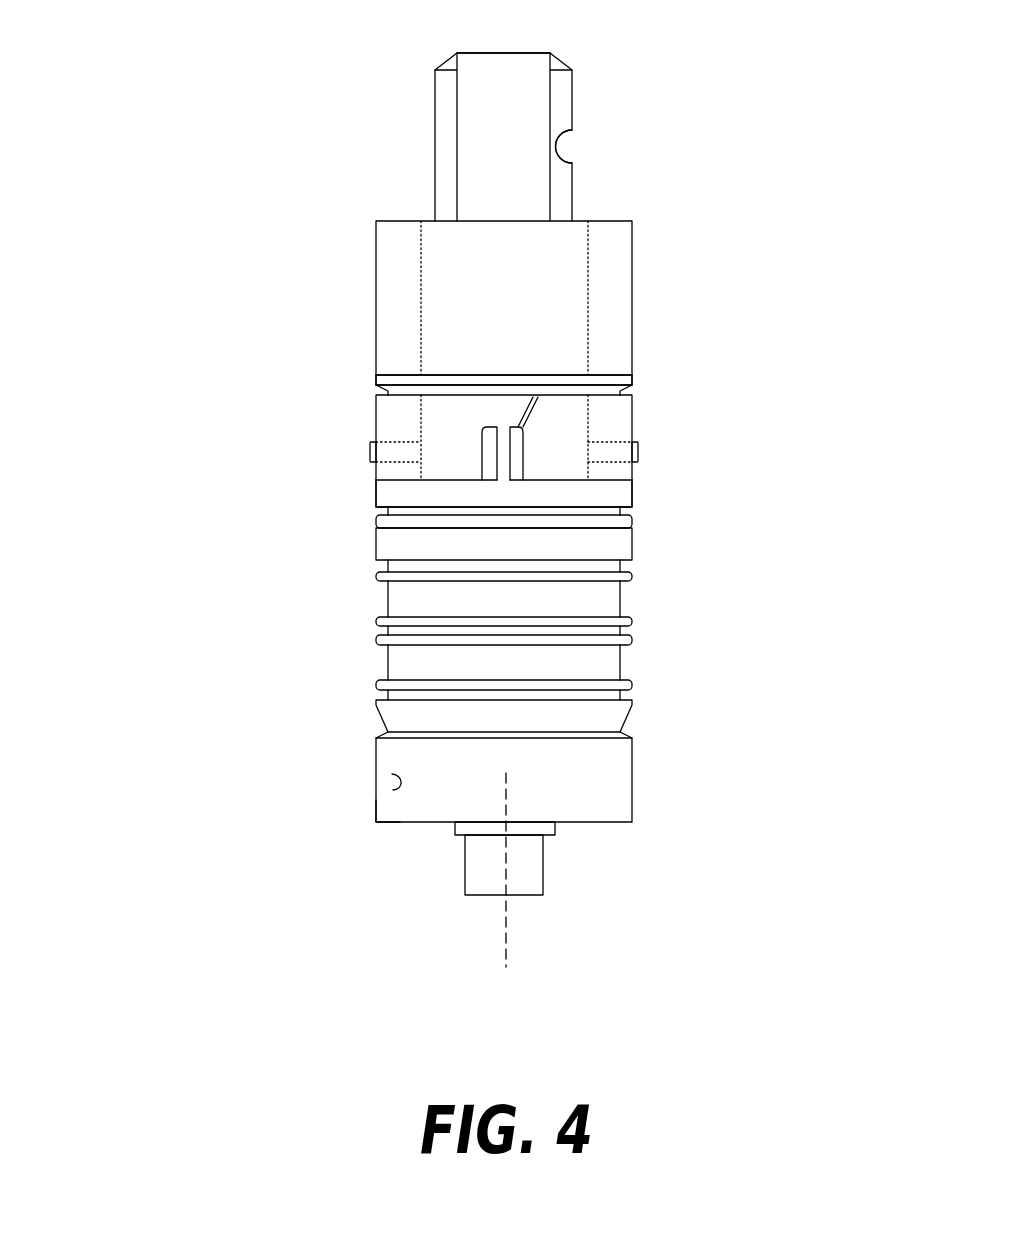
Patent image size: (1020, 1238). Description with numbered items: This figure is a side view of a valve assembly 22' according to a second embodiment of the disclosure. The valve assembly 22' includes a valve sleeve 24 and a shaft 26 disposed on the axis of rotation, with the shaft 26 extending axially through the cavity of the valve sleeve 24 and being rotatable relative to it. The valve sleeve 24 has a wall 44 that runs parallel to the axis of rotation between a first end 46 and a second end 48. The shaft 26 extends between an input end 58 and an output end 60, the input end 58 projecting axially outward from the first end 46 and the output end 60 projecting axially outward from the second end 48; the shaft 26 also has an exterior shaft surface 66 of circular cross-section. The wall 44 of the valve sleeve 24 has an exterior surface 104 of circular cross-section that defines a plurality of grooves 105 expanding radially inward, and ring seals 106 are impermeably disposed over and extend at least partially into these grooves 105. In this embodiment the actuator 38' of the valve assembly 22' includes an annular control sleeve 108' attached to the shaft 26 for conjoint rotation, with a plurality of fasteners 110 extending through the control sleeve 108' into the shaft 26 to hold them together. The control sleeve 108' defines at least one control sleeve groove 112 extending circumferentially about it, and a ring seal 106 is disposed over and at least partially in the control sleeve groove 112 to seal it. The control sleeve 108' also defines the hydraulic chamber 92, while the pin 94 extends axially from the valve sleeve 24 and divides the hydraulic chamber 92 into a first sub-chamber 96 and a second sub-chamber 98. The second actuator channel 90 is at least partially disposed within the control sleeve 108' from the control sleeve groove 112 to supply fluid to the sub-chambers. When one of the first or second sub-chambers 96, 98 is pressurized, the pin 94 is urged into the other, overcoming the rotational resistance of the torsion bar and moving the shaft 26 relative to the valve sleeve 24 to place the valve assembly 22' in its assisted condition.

The valve assembly 22' is at (436, 507).
The shaft 26 is at (424, 100).
The input end 58 is at (572, 66).
The exterior shaft surface 66 is at (572, 100).
The control sleeve 108' is at (447, 287).
The hydraulic chamber 92 is at (492, 425).
The second actuator channel 90 is at (533, 395).
The ring seal 106 is at (376, 382).
The control sleeve groove 112 is at (632, 387).
The actuator 38' is at (524, 373).
The fasteners 110 is at (370, 450).
The pin 94 is at (523, 452).
The first sub-chamber 96 is at (482, 470).
The second sub-chamber 98 is at (523, 466).
The first end 46 is at (632, 482).
The grooves 105 is at (376, 572).
The valve sleeve 24 is at (654, 738).
The wall 44 is at (625, 768).
The second end 48 is at (625, 818).
The exterior surface 104 is at (393, 790).
The output end 60 is at (385, 822).